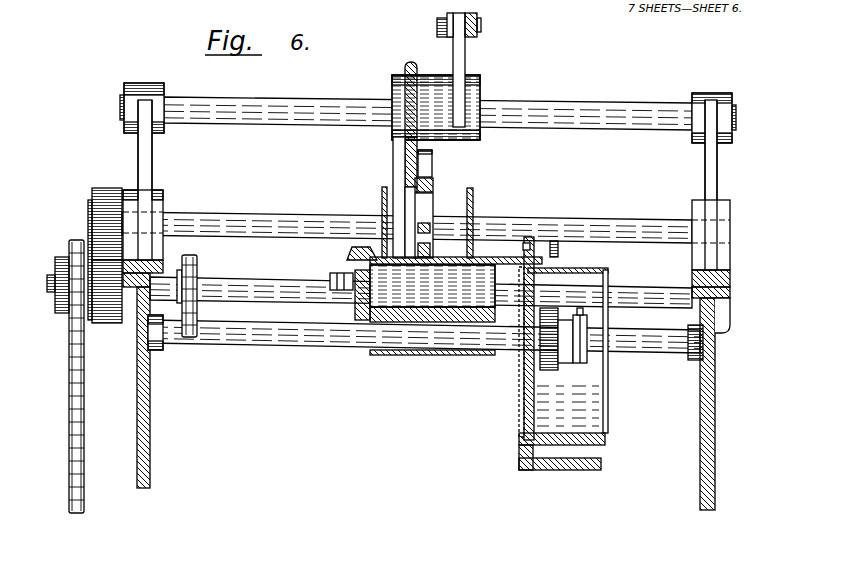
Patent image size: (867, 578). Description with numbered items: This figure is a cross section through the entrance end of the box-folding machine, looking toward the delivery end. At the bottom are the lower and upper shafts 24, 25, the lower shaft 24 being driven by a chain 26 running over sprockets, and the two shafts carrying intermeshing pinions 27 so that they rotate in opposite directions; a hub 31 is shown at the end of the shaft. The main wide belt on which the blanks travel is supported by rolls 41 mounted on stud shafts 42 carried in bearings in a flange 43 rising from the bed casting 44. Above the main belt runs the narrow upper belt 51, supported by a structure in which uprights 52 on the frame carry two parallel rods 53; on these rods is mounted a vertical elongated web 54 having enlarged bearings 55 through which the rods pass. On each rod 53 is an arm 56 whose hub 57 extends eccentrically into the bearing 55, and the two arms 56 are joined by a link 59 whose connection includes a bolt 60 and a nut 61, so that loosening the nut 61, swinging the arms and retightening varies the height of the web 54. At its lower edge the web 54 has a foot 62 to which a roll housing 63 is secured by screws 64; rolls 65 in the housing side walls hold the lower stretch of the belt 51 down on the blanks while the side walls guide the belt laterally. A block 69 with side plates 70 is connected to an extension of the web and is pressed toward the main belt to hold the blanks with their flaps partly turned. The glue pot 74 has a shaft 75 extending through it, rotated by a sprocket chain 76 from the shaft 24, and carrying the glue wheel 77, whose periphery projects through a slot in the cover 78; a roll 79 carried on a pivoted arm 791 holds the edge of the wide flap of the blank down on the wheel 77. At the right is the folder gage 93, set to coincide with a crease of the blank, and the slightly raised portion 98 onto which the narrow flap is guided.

The lower shaft 24 is at (246, 287).
The upper shaft 25 is at (253, 213).
The chain 26 is at (69, 385).
The pinions 27 is at (97, 187).
The hub 31 is at (57, 313).
The rolls 41 is at (397, 288).
The stud shafts 42 is at (332, 277).
The flange 43 is at (355, 313).
The bed casting 44 is at (447, 317).
The upper belt 51 is at (432, 155).
The uprights 52 is at (148, 147).
The rods 53 is at (612, 107).
The web 54 is at (403, 157).
The bearings 55 is at (425, 64).
The arm 56 is at (460, 53).
The hub 57 is at (480, 88).
The link 59 is at (477, 12).
The bolt 60 is at (480, 32).
The nut 61 is at (437, 13).
The foot 62 is at (434, 196).
The roll housing 63 is at (438, 190).
The screws 64 is at (432, 177).
The rolls 65 is at (433, 248).
The block 69 is at (473, 203).
The side plates 70 is at (510, 257).
The glue pot 74 is at (607, 403).
The shaft 75 is at (513, 343).
The sprocket chain 76 is at (198, 307).
The glue wheel 77 is at (537, 302).
The cover 78 is at (593, 268).
The roll 79 is at (565, 240).
The arm 791 is at (660, 223).
The folder gage 93 is at (380, 190).
The raised portion 98 is at (362, 250).